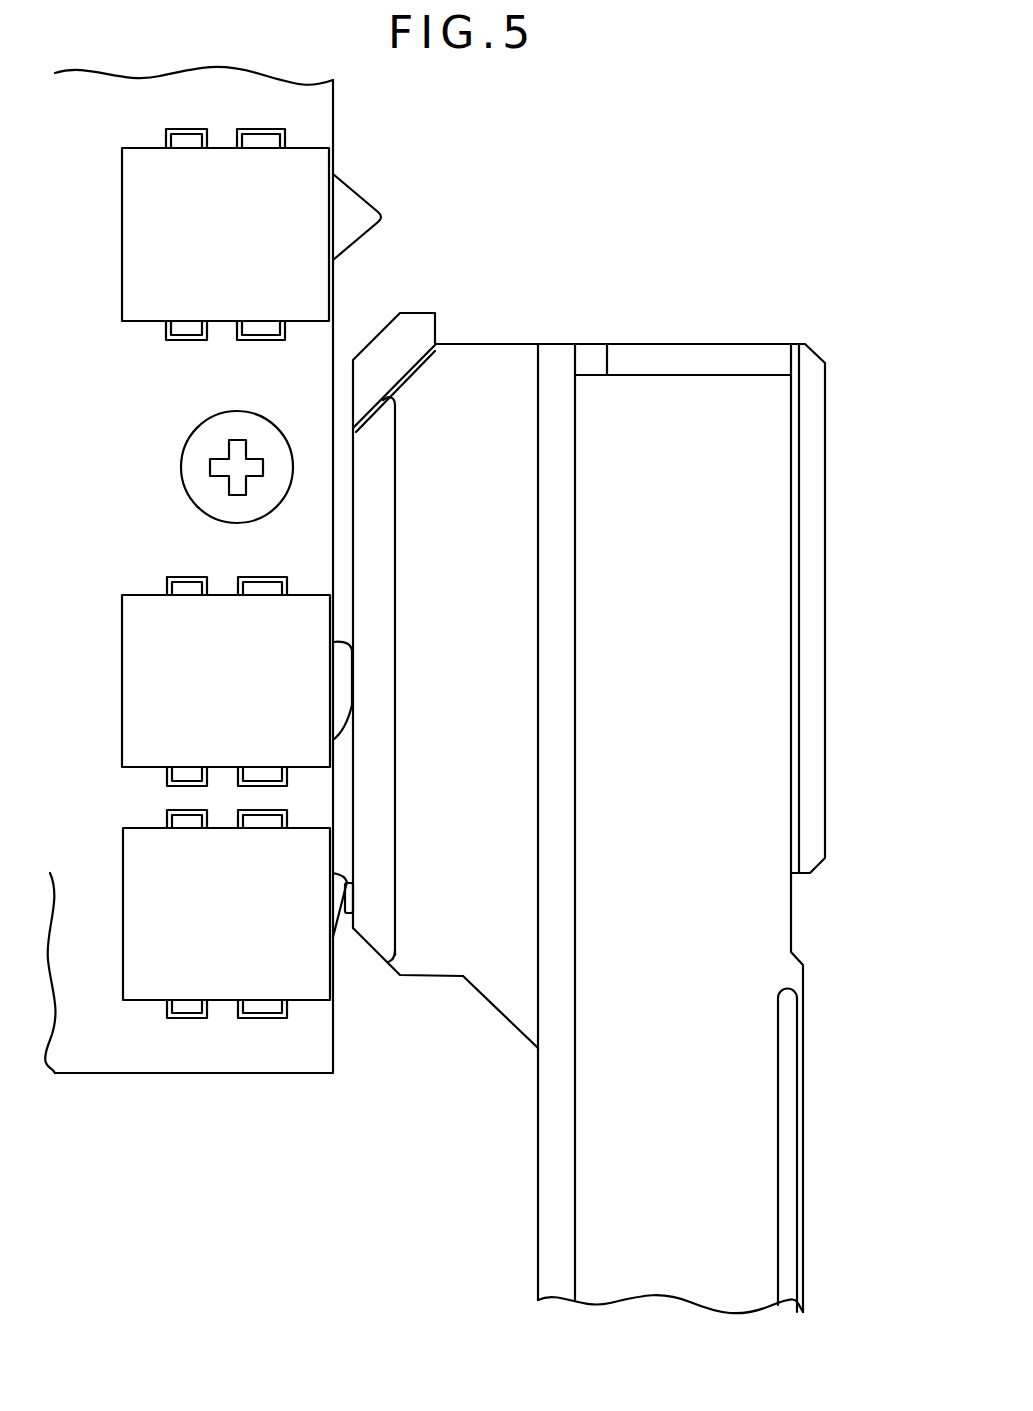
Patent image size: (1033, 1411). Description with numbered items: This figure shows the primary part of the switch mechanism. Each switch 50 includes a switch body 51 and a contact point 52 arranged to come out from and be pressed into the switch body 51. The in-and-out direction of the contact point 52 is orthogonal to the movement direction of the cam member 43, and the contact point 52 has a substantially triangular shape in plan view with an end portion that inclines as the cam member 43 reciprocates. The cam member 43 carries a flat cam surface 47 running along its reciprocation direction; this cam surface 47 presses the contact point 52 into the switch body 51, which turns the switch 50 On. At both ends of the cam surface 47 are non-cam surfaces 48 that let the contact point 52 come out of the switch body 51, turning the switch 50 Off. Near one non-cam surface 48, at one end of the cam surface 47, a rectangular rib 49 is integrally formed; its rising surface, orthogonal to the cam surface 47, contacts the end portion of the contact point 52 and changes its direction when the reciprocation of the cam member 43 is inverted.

The cam member 43 is at (707, 330).
The cam surface 47 is at (348, 818).
The non-cam surface 48 is at (378, 332).
The rib 49 is at (352, 903).
The switch 50 is at (183, 581).
The switch body 51 is at (135, 222).
The contact point 52 is at (352, 205).